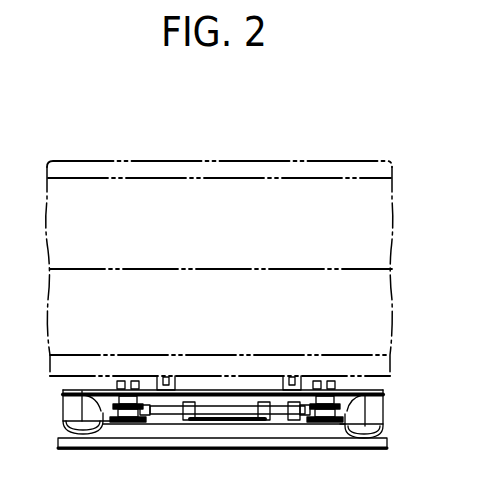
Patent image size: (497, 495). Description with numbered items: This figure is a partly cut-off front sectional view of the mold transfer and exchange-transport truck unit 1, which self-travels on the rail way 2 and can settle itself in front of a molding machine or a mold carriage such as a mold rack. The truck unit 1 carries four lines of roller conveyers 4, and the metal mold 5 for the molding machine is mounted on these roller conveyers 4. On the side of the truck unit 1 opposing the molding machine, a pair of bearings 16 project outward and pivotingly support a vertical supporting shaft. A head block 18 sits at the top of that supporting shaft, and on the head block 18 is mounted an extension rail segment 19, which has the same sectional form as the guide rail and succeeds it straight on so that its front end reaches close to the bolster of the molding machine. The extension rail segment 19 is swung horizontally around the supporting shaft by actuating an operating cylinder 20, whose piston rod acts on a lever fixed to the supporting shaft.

The mold transfer and exchange-transport truck unit 1 is at (389, 389).
The rail way 2 is at (388, 445).
The roller conveyers 4 is at (172, 376).
The metal mold 5 is at (399, 231).
The bearings 16 is at (72, 414).
The head block 18 is at (75, 391).
The extension rail segment 19 is at (118, 380).
The operating cylinder 20 is at (176, 424).